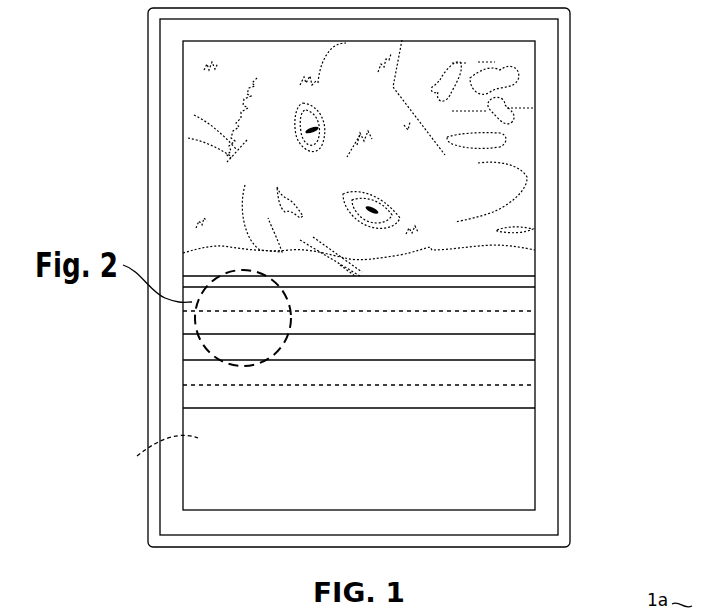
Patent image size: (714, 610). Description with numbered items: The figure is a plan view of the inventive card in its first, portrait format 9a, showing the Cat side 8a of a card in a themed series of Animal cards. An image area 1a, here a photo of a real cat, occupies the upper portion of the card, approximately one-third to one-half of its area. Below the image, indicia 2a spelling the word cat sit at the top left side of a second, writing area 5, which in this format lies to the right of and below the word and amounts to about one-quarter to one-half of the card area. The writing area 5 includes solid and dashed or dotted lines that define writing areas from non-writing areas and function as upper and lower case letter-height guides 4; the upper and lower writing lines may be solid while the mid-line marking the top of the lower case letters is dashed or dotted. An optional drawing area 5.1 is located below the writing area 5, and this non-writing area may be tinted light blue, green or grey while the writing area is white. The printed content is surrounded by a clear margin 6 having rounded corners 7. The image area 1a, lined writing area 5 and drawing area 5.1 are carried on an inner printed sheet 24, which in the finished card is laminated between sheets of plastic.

The image area 1a is at (197, 102).
The card in portrait format 9a is at (584, 80).
The clear margin 6 is at (153, 219).
The rounded corners 7 is at (568, 546).
The upper and lower case letter-height guides 4 is at (525, 408).
The writing area 5 is at (190, 330).
The indicia 2a is at (203, 322).
The Cat side of the card 8a is at (366, 483).
The drawing area 5.1 is at (522, 468).
The inner printed sheet 24 is at (154, 462).